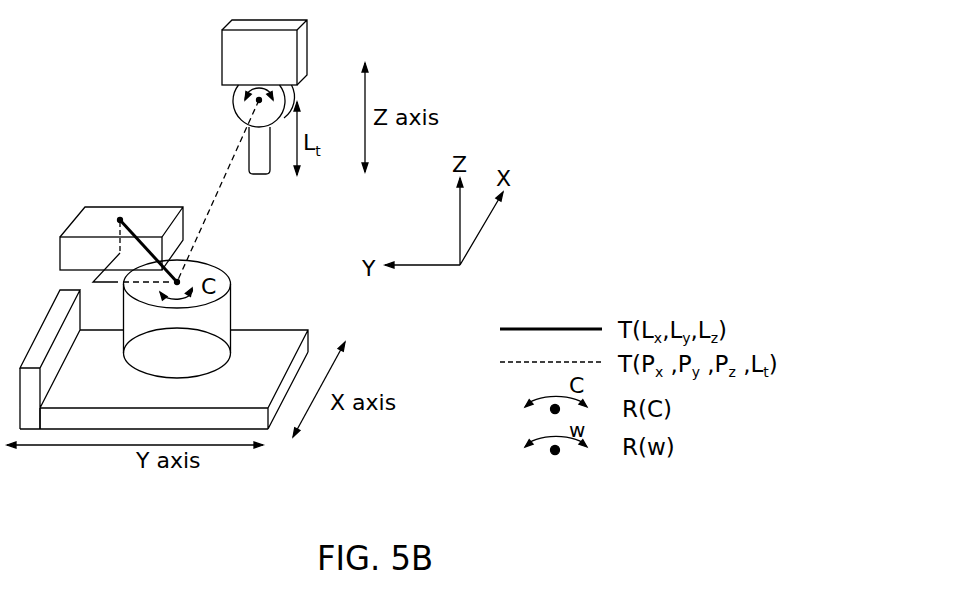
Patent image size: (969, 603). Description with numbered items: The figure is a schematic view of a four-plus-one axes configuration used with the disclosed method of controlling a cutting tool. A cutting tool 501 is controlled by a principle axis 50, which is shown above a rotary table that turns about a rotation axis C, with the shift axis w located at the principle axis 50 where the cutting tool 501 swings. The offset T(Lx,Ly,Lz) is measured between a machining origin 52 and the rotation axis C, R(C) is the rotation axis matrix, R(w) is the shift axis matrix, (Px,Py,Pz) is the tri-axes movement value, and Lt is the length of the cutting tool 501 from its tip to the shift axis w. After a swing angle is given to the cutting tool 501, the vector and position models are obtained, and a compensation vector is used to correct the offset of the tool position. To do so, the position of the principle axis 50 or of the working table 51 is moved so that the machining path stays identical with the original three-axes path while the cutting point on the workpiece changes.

The principle axis 50 is at (228, 70).
The cutting tool 501 is at (262, 165).
The machining origin 52 is at (120, 219).
The working table 51 is at (260, 425).